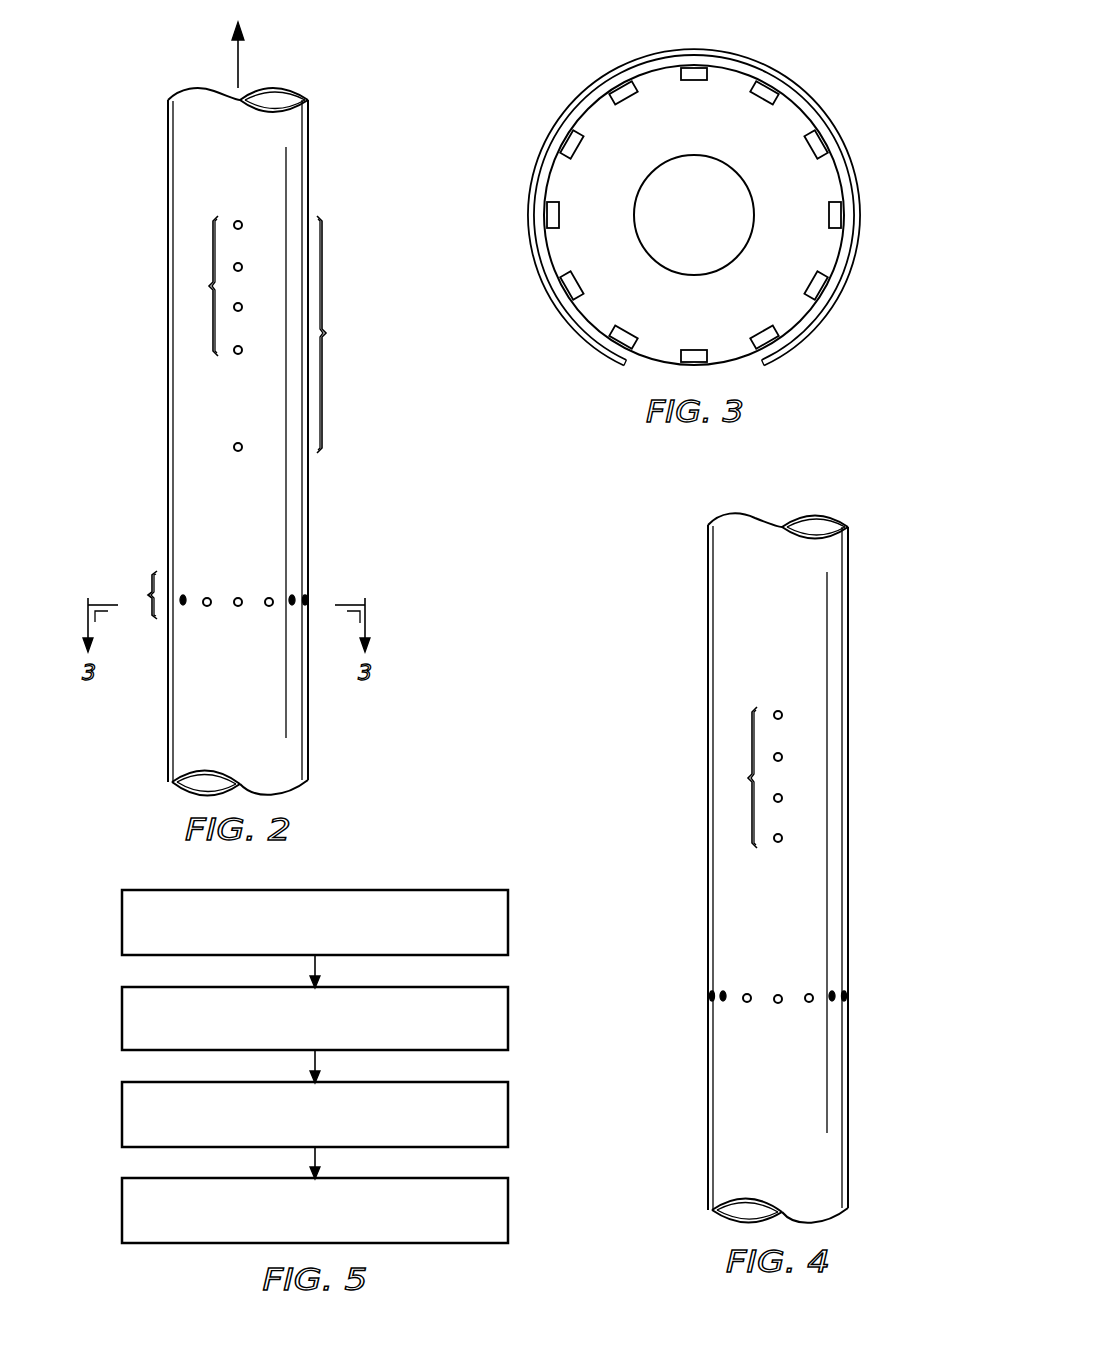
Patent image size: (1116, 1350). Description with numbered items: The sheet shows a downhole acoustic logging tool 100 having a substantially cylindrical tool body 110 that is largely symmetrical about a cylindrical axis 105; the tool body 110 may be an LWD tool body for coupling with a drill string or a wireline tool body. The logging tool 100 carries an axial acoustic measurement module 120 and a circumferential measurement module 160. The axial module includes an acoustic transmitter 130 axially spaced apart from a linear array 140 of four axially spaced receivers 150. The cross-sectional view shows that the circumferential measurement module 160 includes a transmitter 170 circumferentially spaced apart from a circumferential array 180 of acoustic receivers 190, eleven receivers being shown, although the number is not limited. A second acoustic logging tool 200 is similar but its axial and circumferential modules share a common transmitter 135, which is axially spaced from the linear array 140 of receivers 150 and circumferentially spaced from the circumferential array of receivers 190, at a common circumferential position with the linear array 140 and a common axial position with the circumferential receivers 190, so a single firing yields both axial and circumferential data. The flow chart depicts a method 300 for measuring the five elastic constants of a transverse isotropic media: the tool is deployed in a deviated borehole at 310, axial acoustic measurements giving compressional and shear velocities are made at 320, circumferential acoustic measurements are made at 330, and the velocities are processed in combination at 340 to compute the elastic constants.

In FIG. 2, the downhole acoustic logging tool 100 is at (209, 409).
In FIG. 2, the cylindrical axis 105 is at (240, 63).
In FIG. 2, the tool body 110 is at (168, 165).
In FIG. 2, the axial acoustic measurement module 120 is at (345, 334).
In FIG. 2, the acoustic transmitter 130 is at (238, 451).
In FIG. 4, the common transmitter 135 is at (779, 1003).
In FIG. 2, the linear array 140 is at (209, 286).
In FIG. 4, the linear array 140 is at (748, 778).
In FIG. 2, the axially spaced receivers 150 is at (240, 222).
In FIG. 4, the axially spaced receivers 150 is at (784, 756).
In FIG. 2, the circumferential measurement module 160 is at (148, 595).
In FIG. 3, the circumferential measurement module 160 is at (656, 191).
In FIG. 3, the transmitter 170 is at (702, 349).
In FIG. 3, the circumferential array 180 is at (689, 52).
In FIG. 3, the acoustic receivers 190 is at (695, 82).
In FIG. 4, the acoustic receivers 190 is at (726, 990).
In FIG. 4, the acoustic logging tool 200 is at (722, 868).
In FIG. 5, the method 300 is at (349, 1027).
In FIG. 5, the deploying step 310 is at (508, 920).
In FIG. 5, the axial acoustic measurement step 320 is at (508, 1017).
In FIG. 5, the circumferential acoustic measurement step 330 is at (508, 1115).
In FIG. 5, the processing step 340 is at (508, 1212).